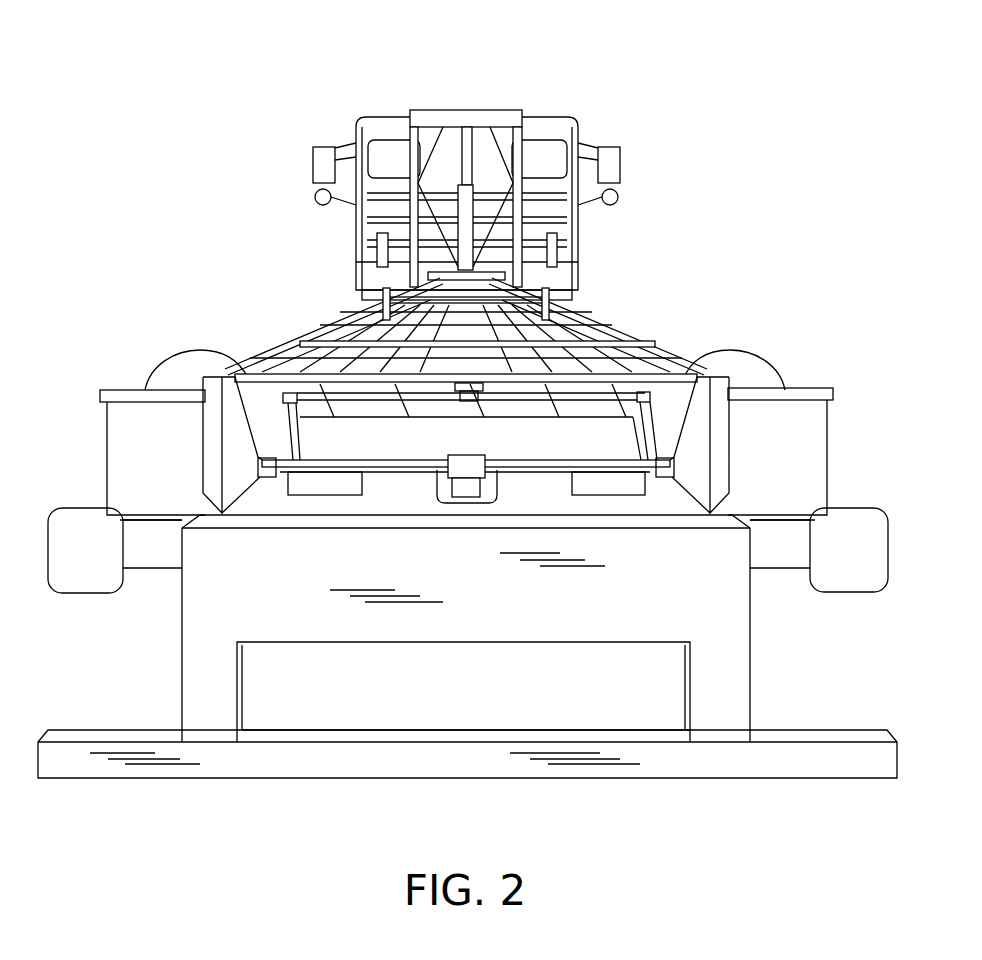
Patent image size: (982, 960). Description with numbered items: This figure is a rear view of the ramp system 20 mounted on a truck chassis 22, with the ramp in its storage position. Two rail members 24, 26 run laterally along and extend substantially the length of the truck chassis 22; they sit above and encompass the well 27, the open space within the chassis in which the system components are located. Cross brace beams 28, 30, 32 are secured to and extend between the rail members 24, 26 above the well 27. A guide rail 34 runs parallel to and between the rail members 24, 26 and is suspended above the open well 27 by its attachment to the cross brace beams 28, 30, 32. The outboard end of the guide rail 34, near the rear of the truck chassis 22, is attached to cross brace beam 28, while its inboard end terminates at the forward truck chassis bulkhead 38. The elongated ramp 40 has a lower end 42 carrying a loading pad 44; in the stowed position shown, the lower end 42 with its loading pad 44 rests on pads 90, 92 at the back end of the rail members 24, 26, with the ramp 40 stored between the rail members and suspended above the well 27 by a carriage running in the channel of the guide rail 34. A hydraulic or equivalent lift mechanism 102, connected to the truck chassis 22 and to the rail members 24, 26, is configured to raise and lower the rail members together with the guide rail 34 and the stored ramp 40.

The ramp system 20 is at (298, 303).
The truck chassis 22 is at (153, 455).
The rail member 24 is at (310, 337).
The rail member 26 is at (640, 373).
The well 27 is at (300, 363).
The cross brace beam 28 is at (728, 374).
The cross brace beam 30 is at (647, 346).
The cross brace beam 32 is at (385, 292).
The guide rail 34 is at (545, 298).
The forward truck chassis bulkhead 38 is at (600, 310).
The elongated ramp 40 is at (587, 409).
The lower end 42 is at (653, 432).
The loading pad 44 is at (620, 450).
The pad 90 is at (258, 476).
The pad 92 is at (660, 470).
The lift mechanism 102 is at (495, 117).